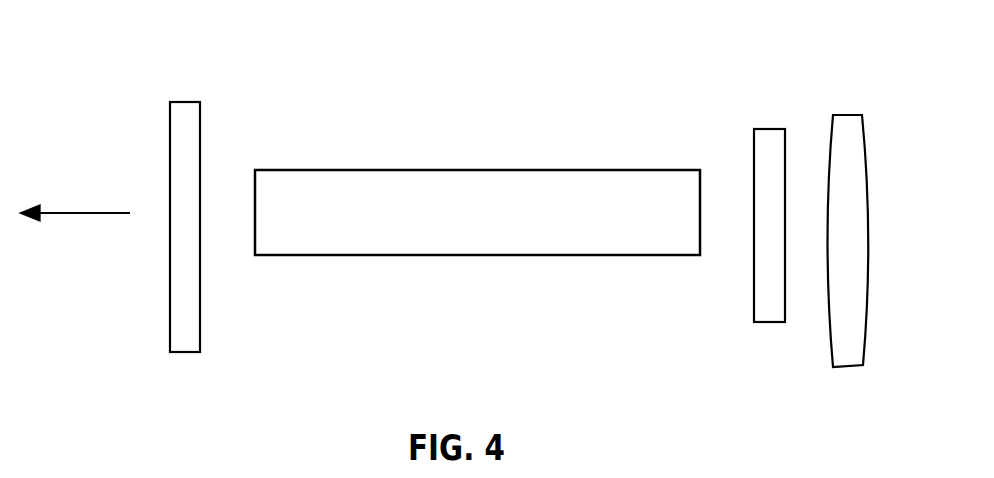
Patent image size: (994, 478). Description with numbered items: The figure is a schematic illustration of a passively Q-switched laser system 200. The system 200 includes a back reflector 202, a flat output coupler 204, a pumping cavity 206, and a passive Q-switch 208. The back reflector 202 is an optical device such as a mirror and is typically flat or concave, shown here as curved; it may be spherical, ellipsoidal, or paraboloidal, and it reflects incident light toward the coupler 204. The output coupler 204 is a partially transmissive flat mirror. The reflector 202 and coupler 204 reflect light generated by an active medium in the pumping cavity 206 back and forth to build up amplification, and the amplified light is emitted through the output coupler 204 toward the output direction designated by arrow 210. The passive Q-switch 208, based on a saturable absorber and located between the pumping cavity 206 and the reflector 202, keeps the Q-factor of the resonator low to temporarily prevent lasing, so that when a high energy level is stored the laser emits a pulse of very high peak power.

The passively Q-switched laser system 200 is at (256, 74).
The back reflector 202 is at (842, 367).
The flat output coupler 204 is at (180, 352).
The pumping cavity 206 is at (533, 255).
The passive Q-switch 208 is at (765, 322).
The arrow 210 is at (75, 213).